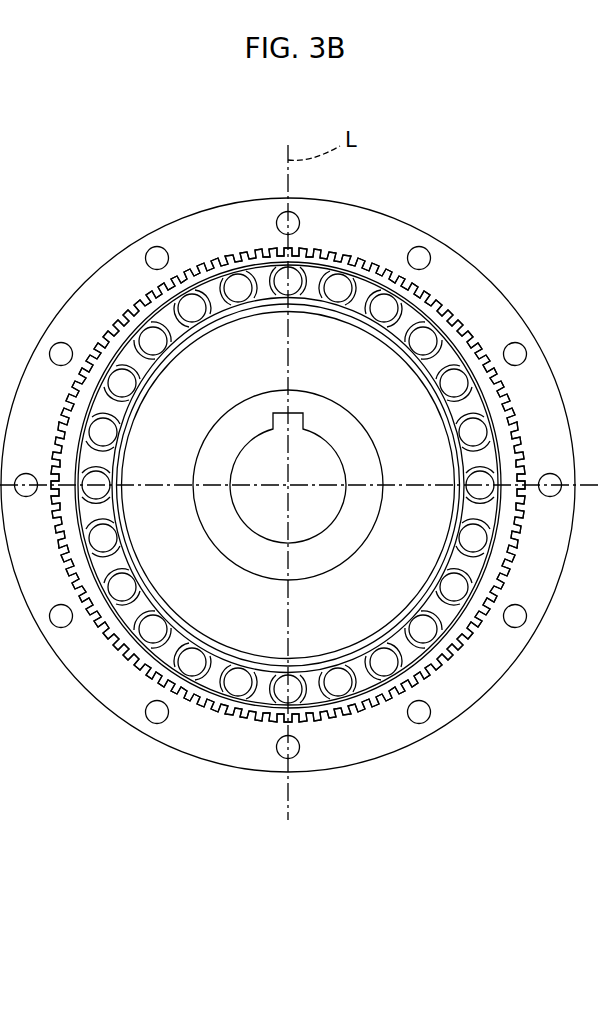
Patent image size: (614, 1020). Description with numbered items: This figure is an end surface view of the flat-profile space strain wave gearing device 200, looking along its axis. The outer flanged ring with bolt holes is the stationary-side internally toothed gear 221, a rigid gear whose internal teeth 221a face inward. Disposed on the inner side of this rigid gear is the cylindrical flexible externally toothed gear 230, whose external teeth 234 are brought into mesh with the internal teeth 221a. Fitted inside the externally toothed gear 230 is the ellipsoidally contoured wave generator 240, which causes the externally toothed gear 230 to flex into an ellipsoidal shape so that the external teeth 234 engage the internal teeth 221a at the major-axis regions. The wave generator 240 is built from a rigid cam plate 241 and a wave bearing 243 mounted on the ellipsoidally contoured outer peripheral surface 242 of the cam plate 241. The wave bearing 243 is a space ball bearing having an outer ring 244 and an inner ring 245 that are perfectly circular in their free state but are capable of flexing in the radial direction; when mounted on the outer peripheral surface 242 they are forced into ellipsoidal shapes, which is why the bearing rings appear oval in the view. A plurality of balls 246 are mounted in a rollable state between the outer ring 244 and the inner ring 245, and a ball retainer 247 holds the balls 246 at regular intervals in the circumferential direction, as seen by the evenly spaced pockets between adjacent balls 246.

The flat-profile space strain wave gearing device 200 is at (402, 182).
The stationary-side internally toothed gear 221 is at (437, 275).
The internal teeth 221a is at (442, 305).
The cylindrical flexible externally toothed gear 230 is at (465, 325).
The external teeth 234 is at (482, 350).
The wave generator 240 is at (492, 400).
The rigid cam plate 241 is at (422, 550).
The ellipsoidally contoured outer peripheral surface 242 is at (462, 623).
The wave bearing 243 is at (423, 593).
The outer ring 244 is at (366, 672).
The inner ring 245 is at (375, 690).
The balls 246 is at (337, 690).
The ball retainer 247 is at (312, 697).